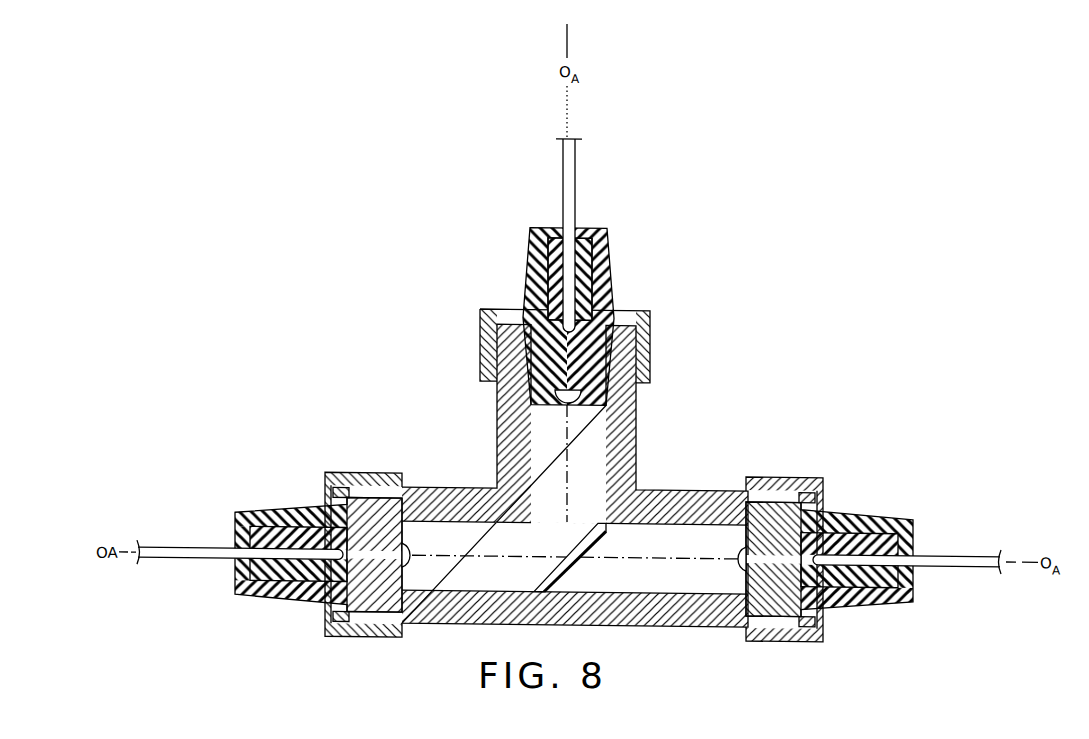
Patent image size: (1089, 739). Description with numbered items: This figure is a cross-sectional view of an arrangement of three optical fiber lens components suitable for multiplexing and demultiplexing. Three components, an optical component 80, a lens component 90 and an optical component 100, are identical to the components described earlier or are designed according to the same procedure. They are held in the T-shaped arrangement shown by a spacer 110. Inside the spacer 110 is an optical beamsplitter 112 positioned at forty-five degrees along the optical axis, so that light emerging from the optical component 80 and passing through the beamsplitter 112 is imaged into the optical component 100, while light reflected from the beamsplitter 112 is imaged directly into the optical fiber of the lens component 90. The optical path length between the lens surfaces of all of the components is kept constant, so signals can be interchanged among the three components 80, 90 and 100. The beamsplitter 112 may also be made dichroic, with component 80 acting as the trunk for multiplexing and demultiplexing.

The optical component 80 is at (281, 511).
The lens component 90 is at (604, 283).
The optical component 100 is at (871, 524).
The spacer 110 is at (636, 441).
The optical beamsplitter 112 is at (561, 566).